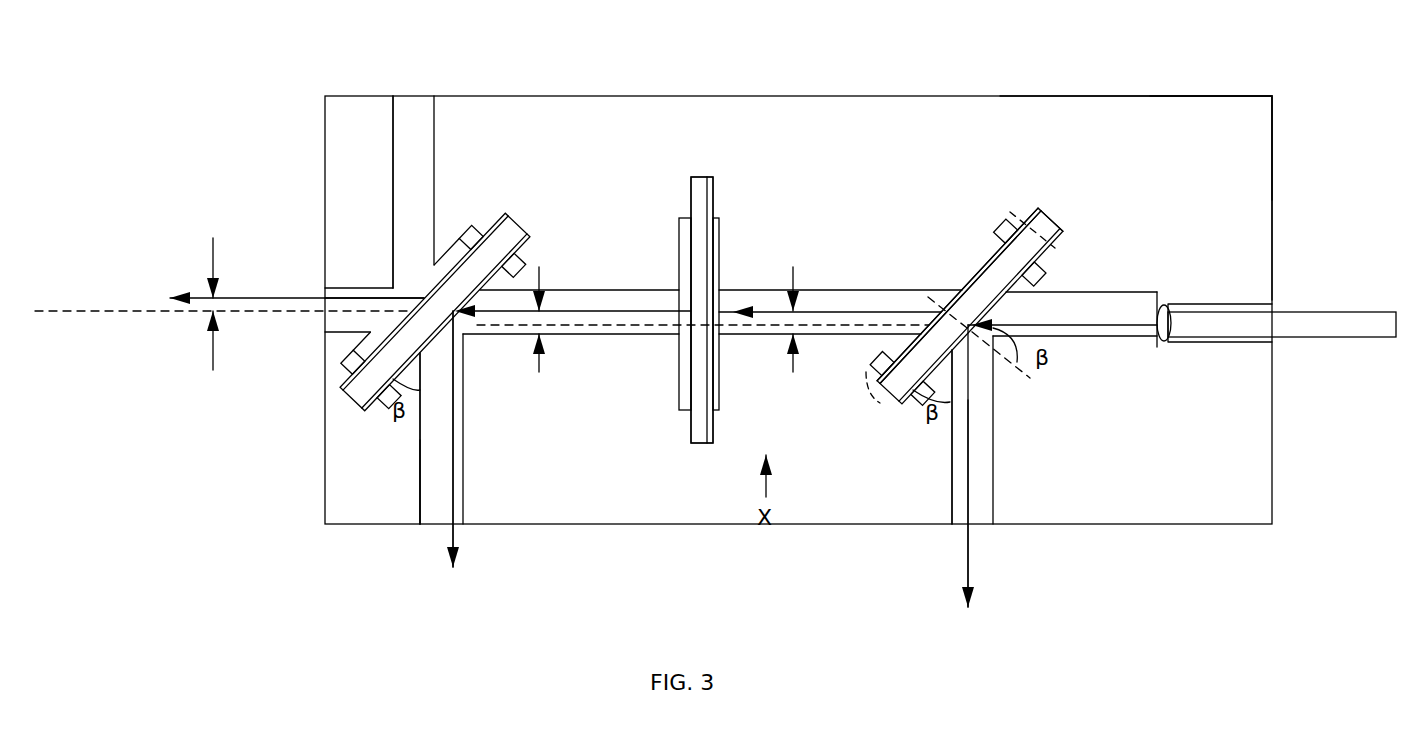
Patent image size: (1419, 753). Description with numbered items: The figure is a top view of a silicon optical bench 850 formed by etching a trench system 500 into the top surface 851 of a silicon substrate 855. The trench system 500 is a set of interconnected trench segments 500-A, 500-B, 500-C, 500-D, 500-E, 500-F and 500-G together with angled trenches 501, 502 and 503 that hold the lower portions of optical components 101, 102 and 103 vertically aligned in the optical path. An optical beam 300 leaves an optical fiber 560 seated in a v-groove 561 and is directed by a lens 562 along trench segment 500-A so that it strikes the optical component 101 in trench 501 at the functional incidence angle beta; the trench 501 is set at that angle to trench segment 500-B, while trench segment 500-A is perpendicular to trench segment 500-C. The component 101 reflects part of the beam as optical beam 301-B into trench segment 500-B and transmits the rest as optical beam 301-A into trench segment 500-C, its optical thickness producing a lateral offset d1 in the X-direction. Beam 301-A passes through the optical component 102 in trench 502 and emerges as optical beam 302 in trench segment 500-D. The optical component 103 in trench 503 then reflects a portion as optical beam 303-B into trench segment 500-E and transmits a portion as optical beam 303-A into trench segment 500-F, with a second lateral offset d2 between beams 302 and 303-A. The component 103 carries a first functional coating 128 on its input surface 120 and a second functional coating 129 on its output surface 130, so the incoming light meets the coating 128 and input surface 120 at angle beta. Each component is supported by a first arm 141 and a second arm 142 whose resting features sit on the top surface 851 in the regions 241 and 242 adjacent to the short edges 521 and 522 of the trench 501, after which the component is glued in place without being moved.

The silicon optical bench 850 is at (830, 96).
The silicon substrate 855 is at (1145, 96).
The top surface 851 is at (1236, 141).
The trench segment 500-G is at (428, 135).
The second functional coating 129 is at (430, 285).
The trench segment 500-F is at (338, 288).
The optical beam 303-A is at (300, 295).
The lateral offset d2 is at (214, 321).
The trench 503 is at (460, 250).
The optical component 103 is at (370, 352).
The trench segment 500-D is at (598, 290).
The optical beam 303-B is at (457, 508).
The trench system 500 is at (430, 427).
The trench segment 500-E is at (430, 495).
The lateral offset d1 is at (668, 336).
The optical component 102 is at (697, 250).
The trench 502 is at (687, 285).
The functional coating 128 is at (717, 230).
The optical beam 302 is at (652, 312).
The optical beam 301-A is at (818, 290).
The trench segment 500-C is at (908, 290).
The input surface 120 is at (883, 353).
The optical component 101 is at (1002, 262).
The output surface 130 is at (962, 280).
The short edge 522 is at (1020, 212).
The trench 501 is at (1023, 280).
The region 242 is at (1027, 210).
The second arm 142 is at (1053, 217).
The first arm 141 is at (877, 380).
The region 241 is at (895, 400).
The short edge 521 is at (900, 405).
The optical beam 301-B is at (968, 455).
The trench segment 500-B is at (958, 503).
The trench segment 500-A is at (1097, 292).
The optical beam 300 is at (1108, 327).
The lens 562 is at (1165, 342).
The v-groove 561 is at (1252, 342).
The optical fiber 560 is at (1318, 335).